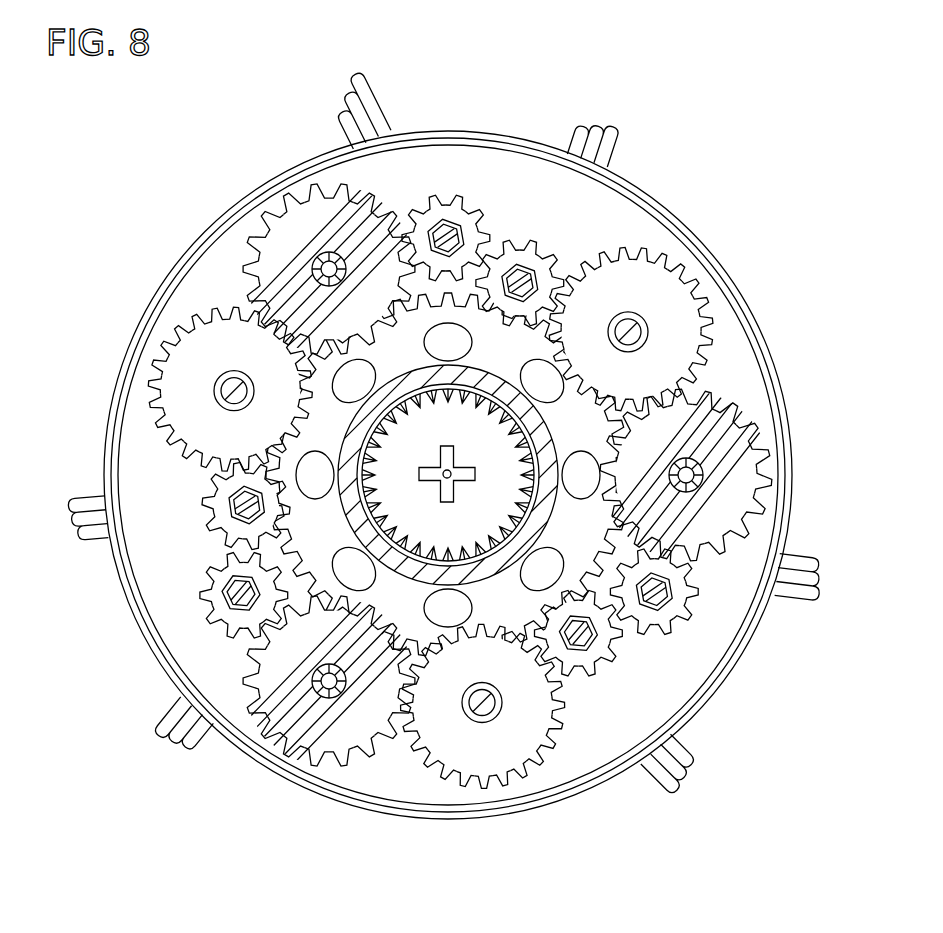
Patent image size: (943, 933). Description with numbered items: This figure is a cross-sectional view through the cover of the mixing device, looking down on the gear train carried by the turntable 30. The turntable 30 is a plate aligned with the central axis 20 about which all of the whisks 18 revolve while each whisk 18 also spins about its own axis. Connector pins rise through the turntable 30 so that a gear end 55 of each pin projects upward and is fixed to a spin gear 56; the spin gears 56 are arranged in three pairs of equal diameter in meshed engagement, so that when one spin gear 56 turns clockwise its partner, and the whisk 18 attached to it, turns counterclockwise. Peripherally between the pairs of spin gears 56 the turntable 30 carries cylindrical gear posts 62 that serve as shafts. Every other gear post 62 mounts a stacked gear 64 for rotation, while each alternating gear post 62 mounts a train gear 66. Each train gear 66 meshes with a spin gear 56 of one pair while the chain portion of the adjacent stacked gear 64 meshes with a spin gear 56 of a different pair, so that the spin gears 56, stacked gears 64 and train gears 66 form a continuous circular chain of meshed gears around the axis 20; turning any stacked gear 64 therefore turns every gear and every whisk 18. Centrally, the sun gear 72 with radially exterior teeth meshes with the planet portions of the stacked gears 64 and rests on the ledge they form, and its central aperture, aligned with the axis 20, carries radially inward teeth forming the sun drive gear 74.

The whisk 18 is at (372, 92).
The central axis 20 is at (452, 472).
The turntable 30 is at (768, 346).
The gear end 55 is at (457, 218).
The spin gear 56 is at (517, 250).
The gear post 62 is at (214, 398).
The stacked gear 64 is at (286, 240).
The train gear 66 is at (189, 375).
The sun gear 72 is at (320, 417).
The sun drive gear 74 is at (378, 515).